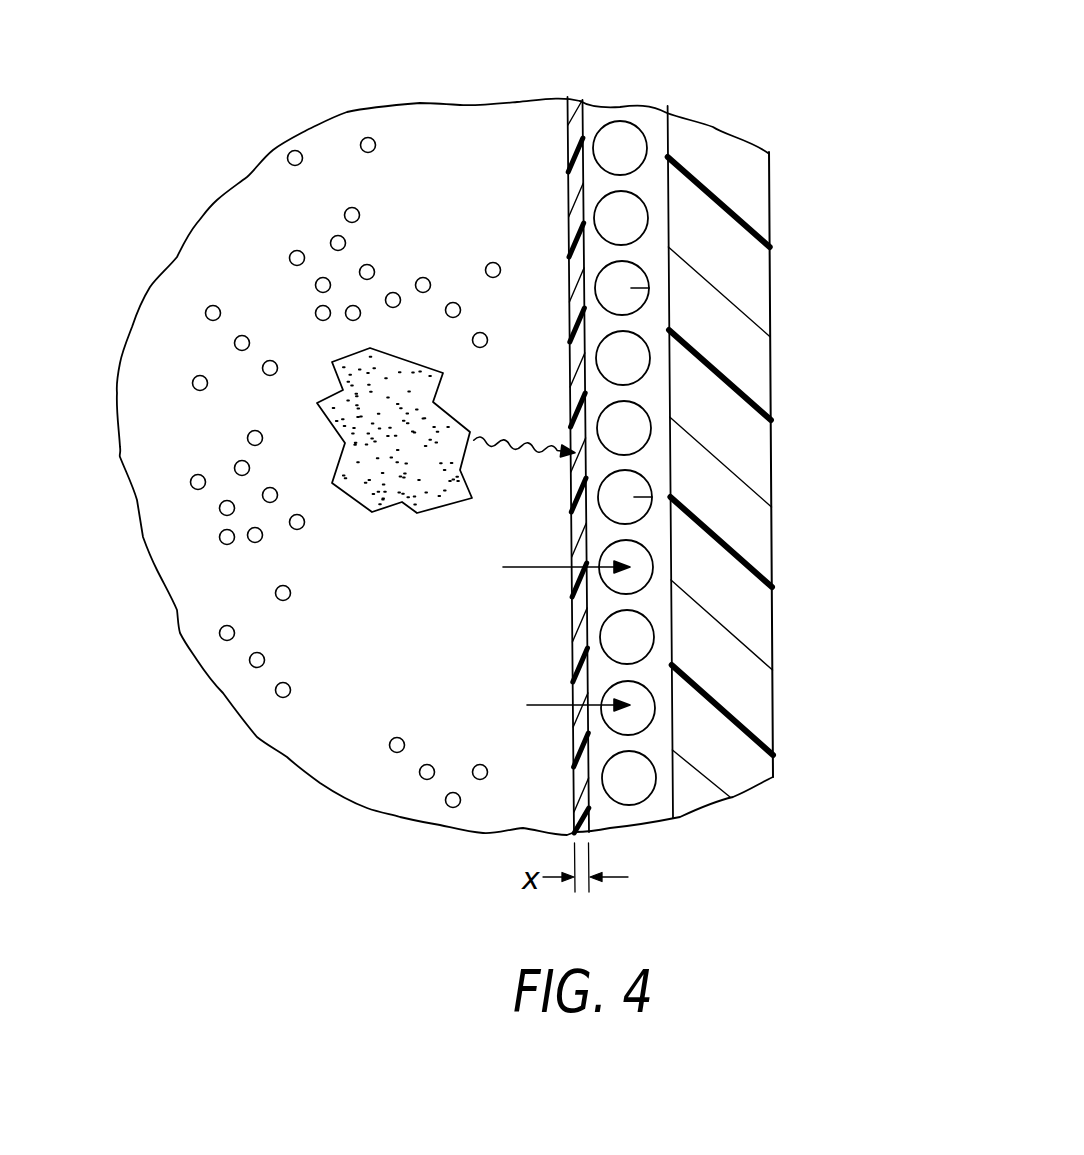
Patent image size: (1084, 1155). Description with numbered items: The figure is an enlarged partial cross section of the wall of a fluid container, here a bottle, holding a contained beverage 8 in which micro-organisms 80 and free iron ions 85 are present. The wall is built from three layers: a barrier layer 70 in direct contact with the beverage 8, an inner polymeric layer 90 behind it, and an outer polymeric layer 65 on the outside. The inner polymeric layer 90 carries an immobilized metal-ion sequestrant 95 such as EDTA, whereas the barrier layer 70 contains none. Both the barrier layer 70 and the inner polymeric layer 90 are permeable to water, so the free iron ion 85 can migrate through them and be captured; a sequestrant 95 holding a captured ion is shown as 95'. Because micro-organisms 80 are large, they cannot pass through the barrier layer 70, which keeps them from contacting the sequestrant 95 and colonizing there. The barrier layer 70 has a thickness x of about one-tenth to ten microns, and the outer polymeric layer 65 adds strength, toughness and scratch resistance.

The contained beverage 8 is at (233, 215).
The outer polymeric layer 65 is at (738, 165).
The barrier layer 70 is at (572, 130).
The micro-organisms 80 is at (358, 497).
The free iron ion 85 is at (470, 210).
The inner polymeric layer 90 is at (627, 110).
The metal-ion sequestrant 95 is at (716, 463).
The sequestrant with sequestered metal-ion 95' is at (722, 376).